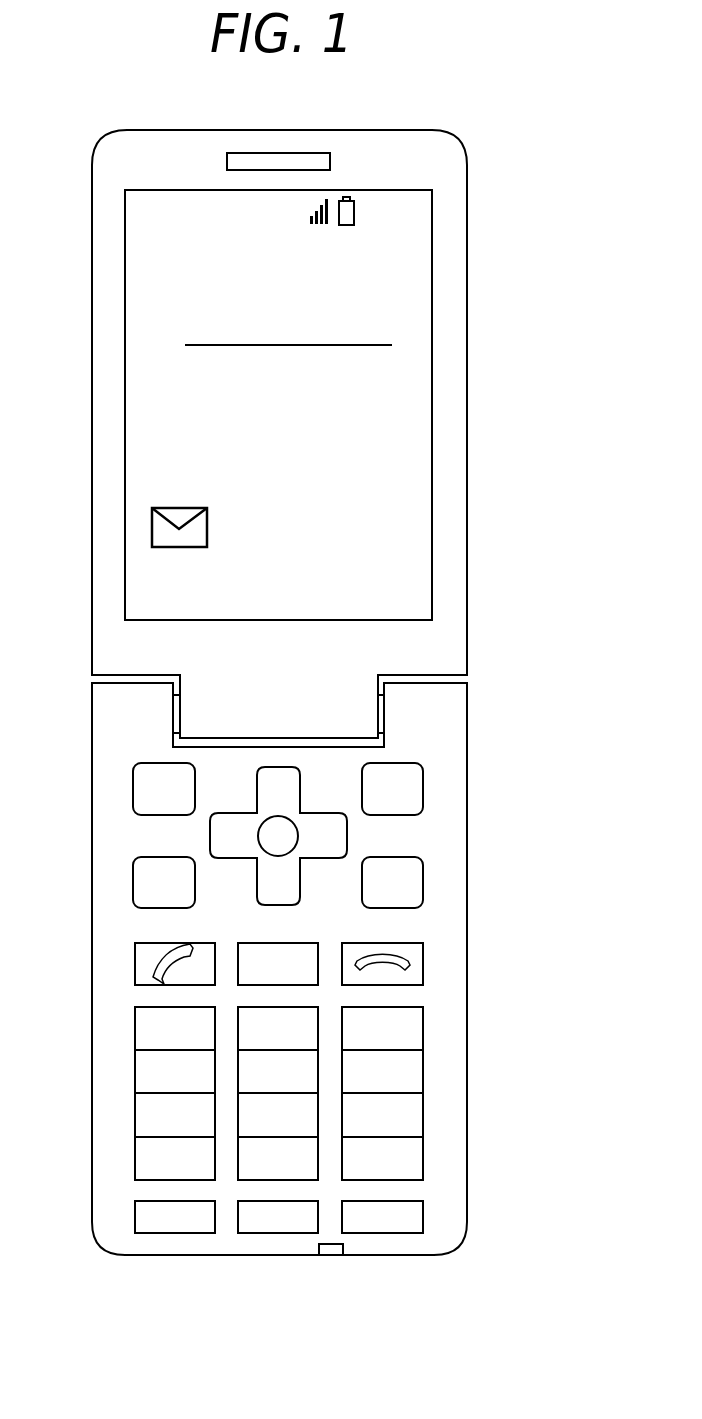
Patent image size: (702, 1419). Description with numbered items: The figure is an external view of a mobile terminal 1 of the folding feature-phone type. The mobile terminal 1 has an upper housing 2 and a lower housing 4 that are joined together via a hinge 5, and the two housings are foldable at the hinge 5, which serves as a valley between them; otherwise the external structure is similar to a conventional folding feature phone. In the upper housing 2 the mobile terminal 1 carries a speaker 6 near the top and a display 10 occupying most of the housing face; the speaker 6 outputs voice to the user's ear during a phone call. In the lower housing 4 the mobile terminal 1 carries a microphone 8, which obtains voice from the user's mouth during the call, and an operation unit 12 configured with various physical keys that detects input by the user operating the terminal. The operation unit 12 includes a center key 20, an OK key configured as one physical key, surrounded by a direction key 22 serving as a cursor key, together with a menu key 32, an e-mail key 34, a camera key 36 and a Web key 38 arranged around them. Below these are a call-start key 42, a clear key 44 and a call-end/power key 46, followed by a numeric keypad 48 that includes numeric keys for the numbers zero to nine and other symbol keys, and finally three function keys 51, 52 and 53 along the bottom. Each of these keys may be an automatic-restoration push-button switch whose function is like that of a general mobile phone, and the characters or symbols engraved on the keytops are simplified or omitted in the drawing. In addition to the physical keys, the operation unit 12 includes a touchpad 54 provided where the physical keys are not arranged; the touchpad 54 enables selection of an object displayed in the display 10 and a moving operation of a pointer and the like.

The mobile terminal 1 is at (528, 188).
The upper housing 2 is at (378, 130).
The lower housing 4 is at (397, 1257).
The hinge 5 is at (384, 712).
The speaker 6 is at (287, 160).
The microphone 8 is at (329, 1255).
The display 10 is at (432, 383).
The operation unit 12 is at (533, 782).
The center key 20 is at (277, 838).
The direction key 22 is at (335, 838).
The menu key 32 is at (143, 790).
The e-mail key 34 is at (143, 882).
The camera key 36 is at (415, 790).
The Web key 38 is at (415, 883).
The call-start key 42 is at (143, 963).
The clear key 44 is at (303, 948).
The call-end/power key 46 is at (410, 963).
The numeric keypad 48 is at (413, 1028).
The function key 51 is at (143, 1217).
The function key 52 is at (277, 1235).
The function key 53 is at (413, 1217).
The touchpad 54 is at (228, 923).